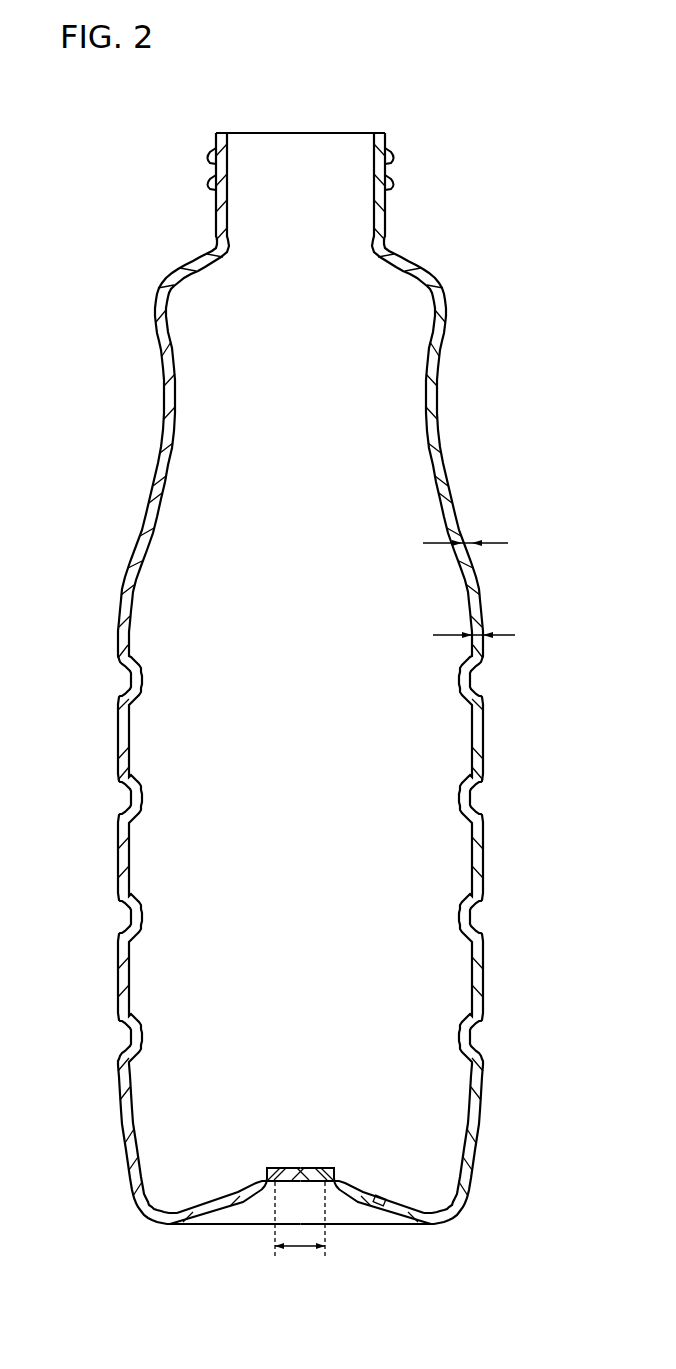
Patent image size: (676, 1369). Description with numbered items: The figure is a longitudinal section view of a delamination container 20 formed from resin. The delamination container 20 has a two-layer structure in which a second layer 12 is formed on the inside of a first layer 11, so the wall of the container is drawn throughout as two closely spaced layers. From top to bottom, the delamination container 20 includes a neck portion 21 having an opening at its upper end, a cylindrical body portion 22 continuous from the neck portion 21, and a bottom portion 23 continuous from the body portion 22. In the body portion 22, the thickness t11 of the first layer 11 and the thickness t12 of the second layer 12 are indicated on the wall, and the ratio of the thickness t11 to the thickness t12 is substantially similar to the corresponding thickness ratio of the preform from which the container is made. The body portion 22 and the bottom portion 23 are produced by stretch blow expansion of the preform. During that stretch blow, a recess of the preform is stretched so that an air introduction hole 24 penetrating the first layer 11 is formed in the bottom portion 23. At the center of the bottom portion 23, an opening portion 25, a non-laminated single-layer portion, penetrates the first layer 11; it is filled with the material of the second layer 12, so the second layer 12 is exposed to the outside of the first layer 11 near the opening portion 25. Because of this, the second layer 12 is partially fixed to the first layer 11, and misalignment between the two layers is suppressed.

The delamination container 20 is at (460, 176).
The first layer 11 is at (446, 373).
The second layer 12 is at (420, 453).
The neck portion 21 is at (215, 220).
The body portion 22 is at (118, 617).
The bottom portion 23 is at (203, 1223).
The air introduction hole 24 is at (376, 1211).
The opening portion 25 is at (300, 1249).
The thickness of the first layer t11 is at (467, 543).
The thickness of the second layer t12 is at (479, 642).